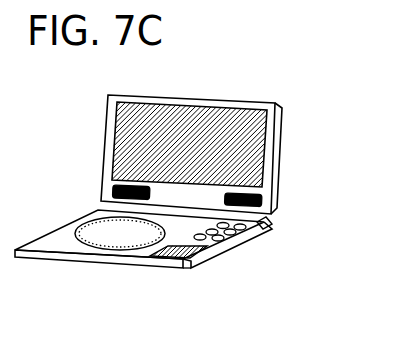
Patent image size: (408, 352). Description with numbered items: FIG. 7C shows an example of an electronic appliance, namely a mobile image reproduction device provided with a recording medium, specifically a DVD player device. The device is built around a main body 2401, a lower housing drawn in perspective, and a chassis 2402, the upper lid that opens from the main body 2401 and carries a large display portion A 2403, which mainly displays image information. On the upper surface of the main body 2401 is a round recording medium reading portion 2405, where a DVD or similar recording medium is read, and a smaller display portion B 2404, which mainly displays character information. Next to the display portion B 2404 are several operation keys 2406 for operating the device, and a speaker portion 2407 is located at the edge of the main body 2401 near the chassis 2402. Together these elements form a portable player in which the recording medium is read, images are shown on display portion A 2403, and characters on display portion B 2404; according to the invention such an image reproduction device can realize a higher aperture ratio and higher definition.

The main body 2401 is at (97, 209).
The chassis 2402 is at (110, 135).
The display portion A 2403 is at (219, 117).
The display portion B 2404 is at (182, 262).
The recording medium reading portion 2405 is at (107, 243).
The operation key 2406 is at (252, 234).
The speaker portion 2407 is at (267, 224).